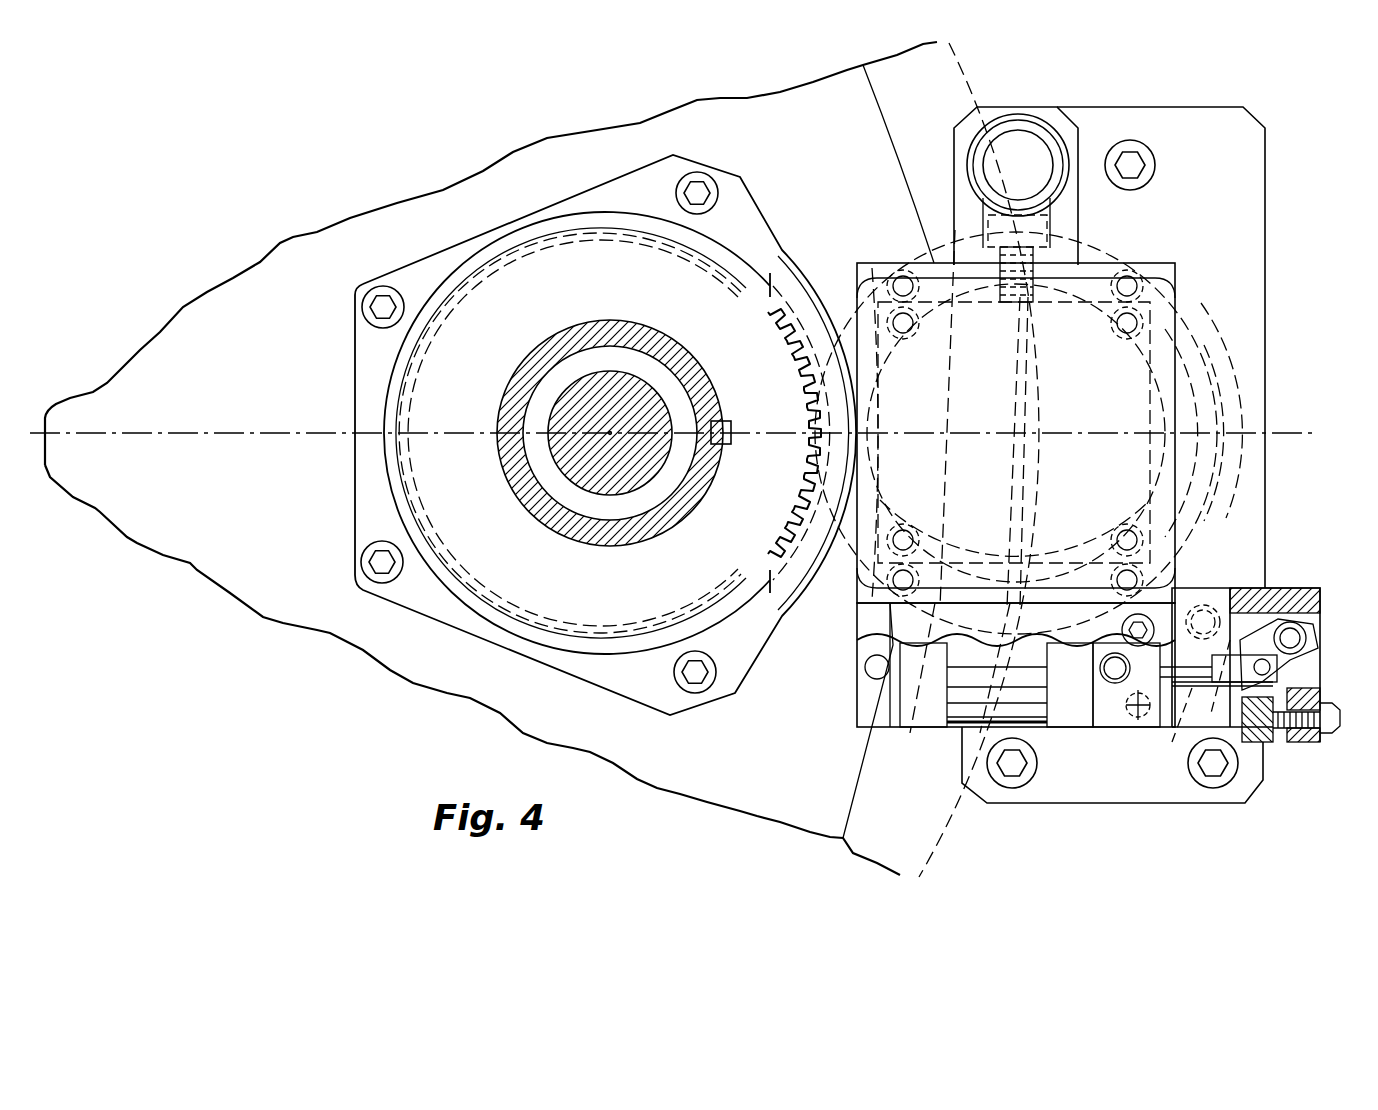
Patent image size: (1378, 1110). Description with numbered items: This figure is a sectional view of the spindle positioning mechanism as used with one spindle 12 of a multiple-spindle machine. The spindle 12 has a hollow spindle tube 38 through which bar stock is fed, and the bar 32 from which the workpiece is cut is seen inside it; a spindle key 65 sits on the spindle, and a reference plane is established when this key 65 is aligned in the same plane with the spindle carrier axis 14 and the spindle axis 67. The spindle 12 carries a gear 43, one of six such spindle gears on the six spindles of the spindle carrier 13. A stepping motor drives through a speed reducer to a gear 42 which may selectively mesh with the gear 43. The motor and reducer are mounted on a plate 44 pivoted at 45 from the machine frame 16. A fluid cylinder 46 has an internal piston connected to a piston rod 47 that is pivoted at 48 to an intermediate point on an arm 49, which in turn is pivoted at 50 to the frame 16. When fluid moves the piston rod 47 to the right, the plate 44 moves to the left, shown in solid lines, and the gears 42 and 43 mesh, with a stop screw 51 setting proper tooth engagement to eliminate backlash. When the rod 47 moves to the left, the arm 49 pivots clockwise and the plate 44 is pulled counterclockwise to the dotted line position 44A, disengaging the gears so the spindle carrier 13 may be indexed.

The spindle 12 is at (538, 206).
The spindle carrier 13 is at (957, 103).
The spindle carrier axis 14 is at (80, 445).
The machine frame 16 is at (1302, 588).
The bar 32 is at (650, 385).
The spindle tube 38 is at (616, 322).
The gear 42 is at (1198, 308).
The gear 43 is at (797, 345).
The plate 44 is at (1200, 570).
The dotted line position 44A is at (1242, 481).
The pivot 45 is at (1028, 140).
The fluid cylinder 46 is at (933, 730).
The piston rod 47 is at (1193, 690).
The pivot 48 is at (1292, 660).
The arm 49 is at (1262, 742).
The pivot 50 is at (1306, 637).
The stop screw 51 is at (1308, 742).
The spindle key 65 is at (722, 420).
The spindle axis 67 is at (608, 432).